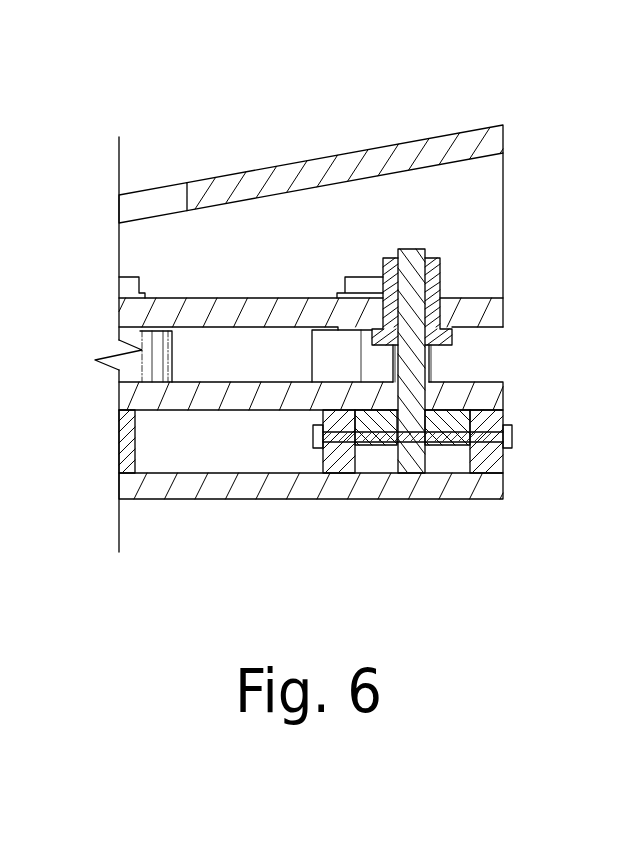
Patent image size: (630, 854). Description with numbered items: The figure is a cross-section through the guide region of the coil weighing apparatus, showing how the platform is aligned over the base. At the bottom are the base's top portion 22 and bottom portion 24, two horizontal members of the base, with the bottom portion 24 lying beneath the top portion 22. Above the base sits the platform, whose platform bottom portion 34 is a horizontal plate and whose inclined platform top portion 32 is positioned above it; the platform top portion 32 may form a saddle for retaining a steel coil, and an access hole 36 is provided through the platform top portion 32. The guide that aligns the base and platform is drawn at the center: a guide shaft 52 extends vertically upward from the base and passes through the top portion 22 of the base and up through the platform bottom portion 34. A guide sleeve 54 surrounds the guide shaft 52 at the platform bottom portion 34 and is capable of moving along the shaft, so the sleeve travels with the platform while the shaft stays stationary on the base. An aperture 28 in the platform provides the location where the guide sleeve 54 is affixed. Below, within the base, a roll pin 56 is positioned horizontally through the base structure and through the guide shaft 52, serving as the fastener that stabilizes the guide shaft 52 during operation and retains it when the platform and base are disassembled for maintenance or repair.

The top portion 22 is at (490, 381).
The bottom portion 24 is at (445, 498).
The aperture 28 is at (366, 305).
The platform top portion 32 is at (379, 147).
The platform bottom portion 34 is at (497, 327).
The access hole 36 is at (158, 198).
The guide shaft 52 is at (415, 249).
The guide sleeve 54 is at (442, 282).
The roll pin 56 is at (493, 447).